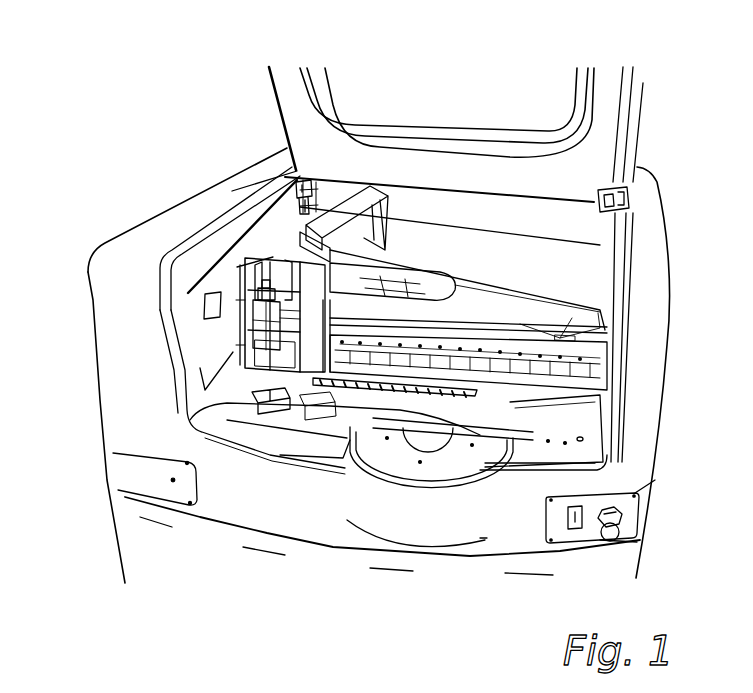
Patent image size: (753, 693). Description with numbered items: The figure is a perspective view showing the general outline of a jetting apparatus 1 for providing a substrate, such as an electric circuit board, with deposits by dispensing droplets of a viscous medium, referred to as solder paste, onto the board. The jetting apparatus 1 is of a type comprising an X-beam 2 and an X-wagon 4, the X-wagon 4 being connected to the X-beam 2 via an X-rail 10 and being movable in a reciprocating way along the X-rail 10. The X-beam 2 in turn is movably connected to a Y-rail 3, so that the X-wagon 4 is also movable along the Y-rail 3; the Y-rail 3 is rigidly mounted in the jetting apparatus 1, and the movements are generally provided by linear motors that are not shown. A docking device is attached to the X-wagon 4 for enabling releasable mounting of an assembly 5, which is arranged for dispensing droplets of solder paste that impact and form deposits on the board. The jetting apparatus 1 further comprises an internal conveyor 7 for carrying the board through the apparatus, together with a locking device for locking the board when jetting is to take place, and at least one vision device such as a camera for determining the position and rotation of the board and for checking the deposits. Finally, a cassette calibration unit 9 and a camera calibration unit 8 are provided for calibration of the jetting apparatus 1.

The jetting apparatus 1 is at (97, 168).
The X-beam 2 is at (577, 323).
The Y-rail 3 is at (300, 193).
The X-wagon 4 is at (307, 295).
The assembly 5 is at (275, 321).
The internal conveyor 7 is at (510, 412).
The camera calibration unit 8 is at (262, 397).
The cassette calibration unit 9 is at (262, 381).
The X-rail 10 is at (590, 357).